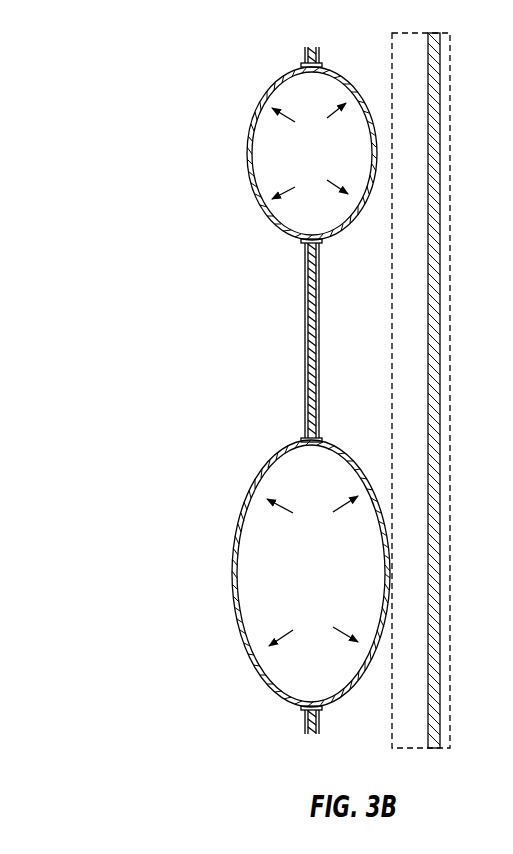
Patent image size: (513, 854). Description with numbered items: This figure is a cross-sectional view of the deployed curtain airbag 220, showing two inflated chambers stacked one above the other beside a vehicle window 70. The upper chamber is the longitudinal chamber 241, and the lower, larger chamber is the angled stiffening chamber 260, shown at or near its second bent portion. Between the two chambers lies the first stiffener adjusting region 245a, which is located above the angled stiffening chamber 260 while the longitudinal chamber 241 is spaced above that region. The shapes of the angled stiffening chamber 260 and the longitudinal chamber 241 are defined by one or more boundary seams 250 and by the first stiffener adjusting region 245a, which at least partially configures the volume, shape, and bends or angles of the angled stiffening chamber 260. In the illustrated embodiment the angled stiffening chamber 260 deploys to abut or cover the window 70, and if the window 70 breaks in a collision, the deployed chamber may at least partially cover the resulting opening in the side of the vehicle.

The window 70 is at (441, 58).
The curtain airbag 220 is at (249, 357).
The longitudinal chamber 241 is at (251, 107).
The first stiffener adjusting region 245a is at (305, 284).
The boundary seam 250 is at (305, 241).
The angled stiffening chamber 260 is at (243, 494).